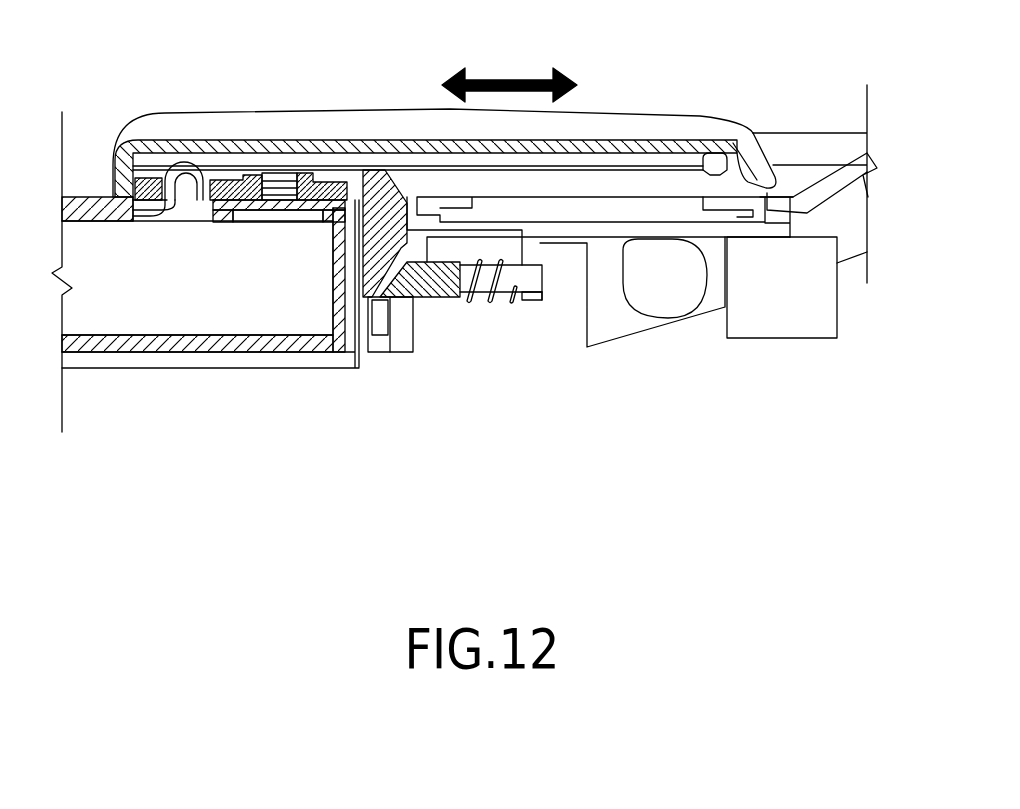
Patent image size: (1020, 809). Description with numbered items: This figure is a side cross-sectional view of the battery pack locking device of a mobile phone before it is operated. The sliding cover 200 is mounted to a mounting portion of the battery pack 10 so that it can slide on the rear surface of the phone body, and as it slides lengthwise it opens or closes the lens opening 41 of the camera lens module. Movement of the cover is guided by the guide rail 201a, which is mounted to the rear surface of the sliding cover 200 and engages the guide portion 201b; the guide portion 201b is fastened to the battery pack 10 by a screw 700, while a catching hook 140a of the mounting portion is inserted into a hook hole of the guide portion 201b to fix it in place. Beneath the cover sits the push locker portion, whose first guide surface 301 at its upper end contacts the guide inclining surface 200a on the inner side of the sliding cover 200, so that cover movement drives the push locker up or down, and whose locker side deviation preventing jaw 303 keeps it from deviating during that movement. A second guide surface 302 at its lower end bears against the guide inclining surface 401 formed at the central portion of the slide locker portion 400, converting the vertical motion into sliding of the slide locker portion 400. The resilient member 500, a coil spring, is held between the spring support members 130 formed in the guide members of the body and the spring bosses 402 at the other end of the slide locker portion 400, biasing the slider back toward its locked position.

The battery pack 10 is at (125, 338).
The lens opening 41 is at (670, 212).
The spring support members 130 is at (522, 301).
The catching hook 140a is at (183, 161).
The sliding cover 200 is at (595, 99).
The guide inclining surface 200a is at (780, 178).
The guide rail 201a is at (297, 173).
The guide portion 201b is at (244, 166).
The first guide surface 301 is at (366, 170).
The second guide surface 302 is at (369, 298).
The locker side deviation preventing jaw 303 is at (403, 198).
The slide locker portion 400 is at (436, 298).
The guide inclining surface 401 is at (390, 299).
The spring bosses 402 is at (548, 301).
The resilient member 500 is at (488, 301).
The screw 700 is at (237, 214).